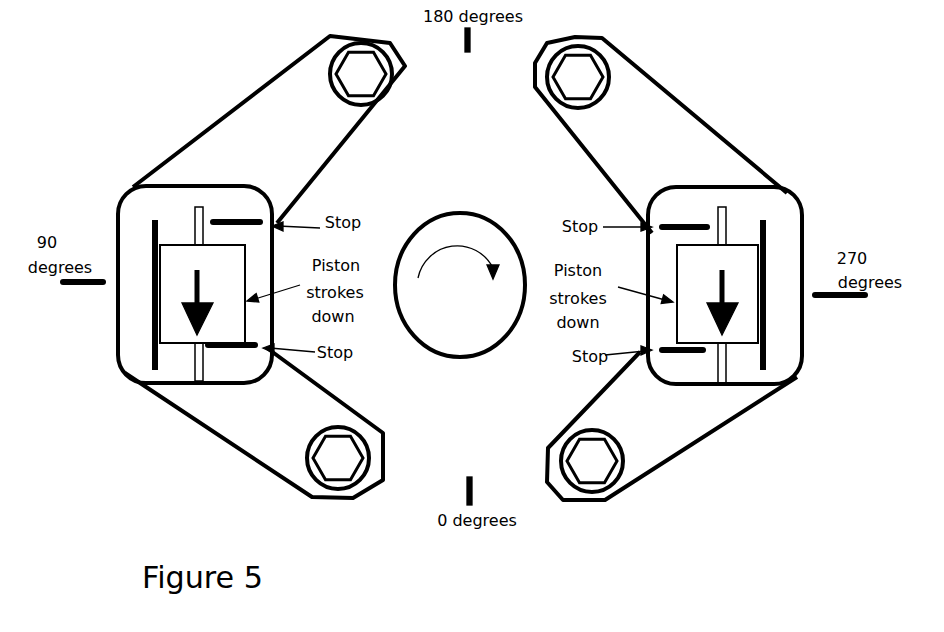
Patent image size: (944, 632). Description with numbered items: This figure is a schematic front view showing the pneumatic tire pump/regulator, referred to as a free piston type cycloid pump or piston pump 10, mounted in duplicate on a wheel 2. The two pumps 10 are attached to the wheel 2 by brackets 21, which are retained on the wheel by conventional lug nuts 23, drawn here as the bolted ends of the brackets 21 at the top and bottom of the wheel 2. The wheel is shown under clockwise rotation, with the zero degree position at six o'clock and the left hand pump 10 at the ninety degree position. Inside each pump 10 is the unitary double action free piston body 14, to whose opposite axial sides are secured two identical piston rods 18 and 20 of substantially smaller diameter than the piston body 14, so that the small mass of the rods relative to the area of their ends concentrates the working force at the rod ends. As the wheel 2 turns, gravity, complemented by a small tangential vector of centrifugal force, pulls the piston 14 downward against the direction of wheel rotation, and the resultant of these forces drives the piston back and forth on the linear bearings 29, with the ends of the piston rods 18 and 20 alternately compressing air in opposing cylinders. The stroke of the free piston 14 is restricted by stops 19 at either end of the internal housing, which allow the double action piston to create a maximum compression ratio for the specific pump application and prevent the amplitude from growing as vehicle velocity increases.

The wheel 2 is at (443, 392).
The piston pump 10 is at (108, 207).
The piston body 14 is at (245, 258).
The piston rod 18 is at (195, 232).
The stop 19 is at (250, 226).
The piston rod 20 is at (200, 353).
The bracket 21 is at (620, 128).
The lug nut 23 is at (360, 73).
The linear bearing 29 is at (153, 311).